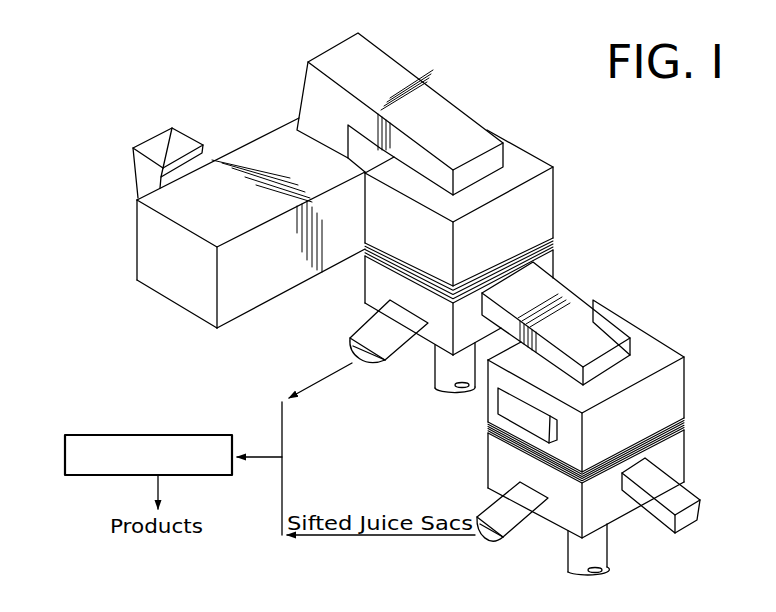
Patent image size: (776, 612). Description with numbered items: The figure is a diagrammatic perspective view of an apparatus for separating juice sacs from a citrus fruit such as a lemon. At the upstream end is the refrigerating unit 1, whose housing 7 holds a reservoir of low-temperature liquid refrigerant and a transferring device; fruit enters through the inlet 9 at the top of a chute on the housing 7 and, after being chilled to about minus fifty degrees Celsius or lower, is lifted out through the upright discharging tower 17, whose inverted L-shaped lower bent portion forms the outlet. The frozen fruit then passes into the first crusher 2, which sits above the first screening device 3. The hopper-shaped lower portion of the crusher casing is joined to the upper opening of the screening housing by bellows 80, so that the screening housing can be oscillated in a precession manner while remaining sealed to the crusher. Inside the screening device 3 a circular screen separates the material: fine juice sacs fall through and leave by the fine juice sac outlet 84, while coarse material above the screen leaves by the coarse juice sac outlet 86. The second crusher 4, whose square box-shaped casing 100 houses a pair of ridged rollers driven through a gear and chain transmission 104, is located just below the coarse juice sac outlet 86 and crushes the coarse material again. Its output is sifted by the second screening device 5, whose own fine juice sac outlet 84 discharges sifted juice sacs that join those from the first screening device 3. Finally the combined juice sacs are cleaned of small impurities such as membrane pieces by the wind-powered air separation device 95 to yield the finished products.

The refrigerating unit 1 is at (176, 284).
The first crusher 2 is at (544, 199).
The first screening device 3 is at (376, 290).
The second crusher 4 is at (669, 388).
The second screening device 5 is at (507, 470).
The housing 7 is at (170, 255).
The inlet 9 is at (168, 145).
The discharging tower 17 is at (368, 58).
The bellows 80 is at (554, 242).
The fine juice sac outlet 84 is at (365, 357).
The coarse juice sac outlet 86 is at (577, 303).
The air separation device 95 is at (158, 434).
The casing 100 is at (678, 406).
The gear and chain transmission 104 is at (510, 408).